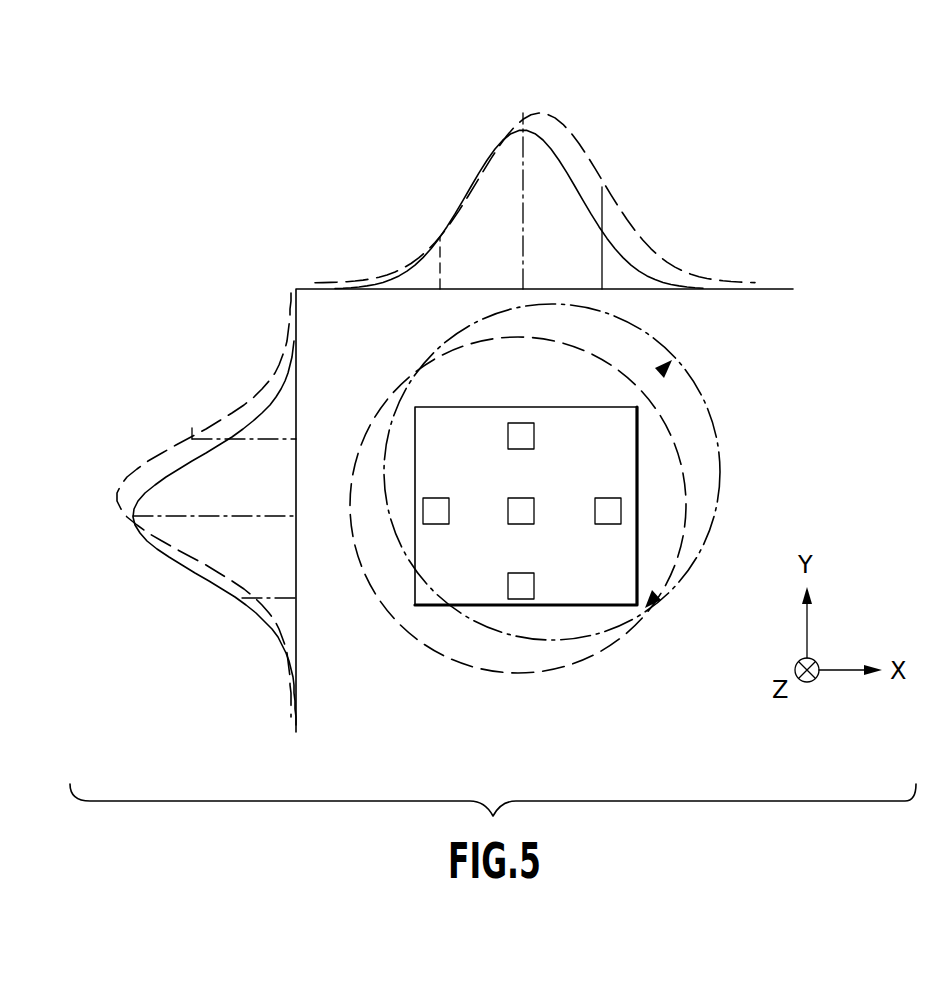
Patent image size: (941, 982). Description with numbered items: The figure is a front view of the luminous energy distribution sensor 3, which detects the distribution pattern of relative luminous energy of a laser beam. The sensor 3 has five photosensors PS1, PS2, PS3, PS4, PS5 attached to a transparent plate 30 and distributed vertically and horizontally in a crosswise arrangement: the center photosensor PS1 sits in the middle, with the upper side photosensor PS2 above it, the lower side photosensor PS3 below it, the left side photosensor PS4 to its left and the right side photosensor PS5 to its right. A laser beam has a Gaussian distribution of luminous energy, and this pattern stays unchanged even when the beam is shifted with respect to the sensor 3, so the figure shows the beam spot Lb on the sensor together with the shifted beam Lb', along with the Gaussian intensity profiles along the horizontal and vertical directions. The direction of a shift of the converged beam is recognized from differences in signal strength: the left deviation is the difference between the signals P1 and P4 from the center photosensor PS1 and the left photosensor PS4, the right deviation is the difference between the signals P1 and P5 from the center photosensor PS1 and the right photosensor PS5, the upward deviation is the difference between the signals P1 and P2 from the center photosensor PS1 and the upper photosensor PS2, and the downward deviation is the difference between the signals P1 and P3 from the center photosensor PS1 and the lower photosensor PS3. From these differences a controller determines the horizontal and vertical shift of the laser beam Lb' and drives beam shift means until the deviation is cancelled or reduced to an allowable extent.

The luminous energy distribution sensor 3 is at (650, 432).
The transparent plate 30 is at (433, 572).
The center photosensor PS1 is at (522, 495).
The upper side photosensor PS2 is at (547, 438).
The lower side photosensor PS3 is at (523, 570).
The left side photosensor PS4 is at (444, 495).
The right side photosensor PS5 is at (609, 495).
The signal from center photosensor P1 is at (520, 128).
The signal from upper side photosensor P2 is at (228, 439).
The signal from lower side photosensor P3 is at (242, 598).
The signal from left side photosensor P4 is at (438, 236).
The signal from right side photosensor P5 is at (604, 224).
The laser beam Lb is at (518, 560).
The shifted laser beam Lb' is at (613, 472).